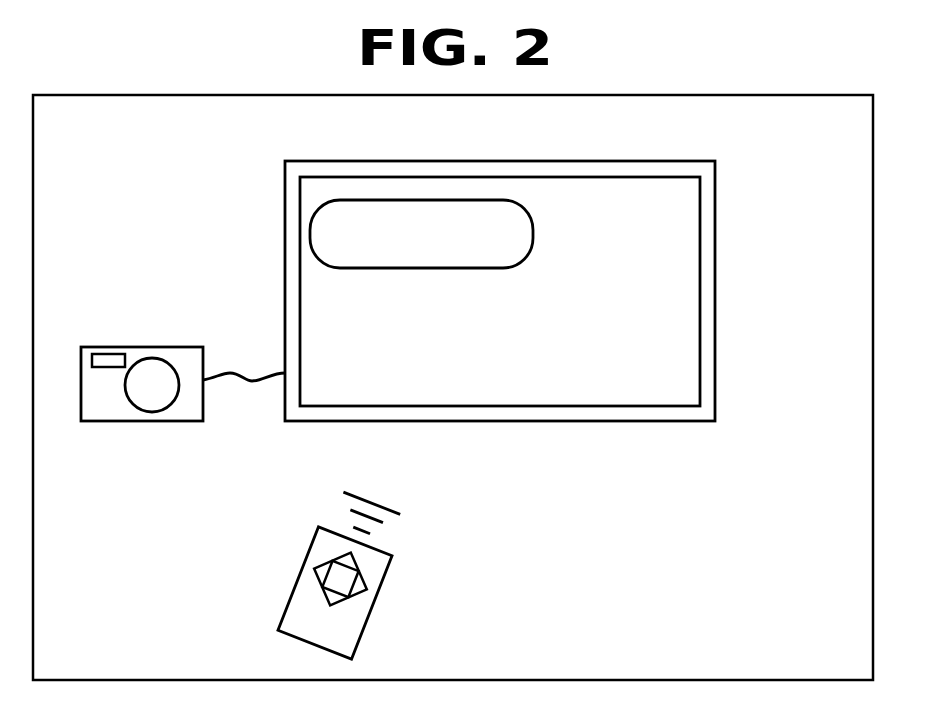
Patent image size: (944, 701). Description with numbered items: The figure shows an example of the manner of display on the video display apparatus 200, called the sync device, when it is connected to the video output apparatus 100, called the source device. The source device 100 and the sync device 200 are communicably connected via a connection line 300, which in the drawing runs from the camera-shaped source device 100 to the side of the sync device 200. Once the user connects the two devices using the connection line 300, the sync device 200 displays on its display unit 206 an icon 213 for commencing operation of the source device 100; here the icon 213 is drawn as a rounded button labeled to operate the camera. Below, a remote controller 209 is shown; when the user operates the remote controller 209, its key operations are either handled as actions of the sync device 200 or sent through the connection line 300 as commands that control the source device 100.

The video output apparatus 100 is at (105, 347).
The video display apparatus 200 is at (541, 265).
The display unit 206 is at (683, 275).
The icon 213 is at (462, 200).
The remote controller 209 is at (307, 558).
The connection line 300 is at (230, 373).